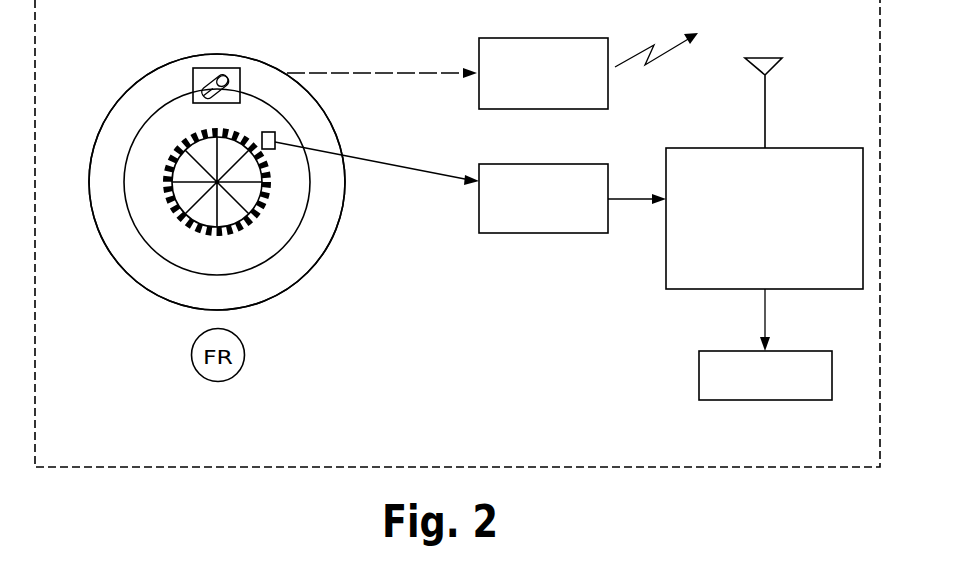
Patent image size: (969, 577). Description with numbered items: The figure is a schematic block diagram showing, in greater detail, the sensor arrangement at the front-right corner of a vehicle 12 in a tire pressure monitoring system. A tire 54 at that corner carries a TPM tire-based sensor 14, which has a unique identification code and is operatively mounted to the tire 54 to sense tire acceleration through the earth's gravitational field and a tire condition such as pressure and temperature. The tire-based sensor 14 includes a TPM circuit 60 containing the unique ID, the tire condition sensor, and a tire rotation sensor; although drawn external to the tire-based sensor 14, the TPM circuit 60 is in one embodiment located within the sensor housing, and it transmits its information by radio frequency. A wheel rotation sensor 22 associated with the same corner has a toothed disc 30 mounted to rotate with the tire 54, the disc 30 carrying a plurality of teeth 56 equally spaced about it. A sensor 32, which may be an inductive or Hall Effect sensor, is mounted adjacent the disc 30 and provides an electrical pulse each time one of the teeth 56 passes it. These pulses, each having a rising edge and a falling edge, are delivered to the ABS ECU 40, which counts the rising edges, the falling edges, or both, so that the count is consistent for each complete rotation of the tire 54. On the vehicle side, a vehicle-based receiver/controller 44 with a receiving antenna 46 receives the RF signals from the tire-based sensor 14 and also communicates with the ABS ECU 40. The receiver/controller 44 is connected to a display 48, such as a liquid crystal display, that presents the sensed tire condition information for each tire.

The vehicle 12 is at (170, 468).
The tire-based sensor 14 is at (226, 68).
The wheel rotation sensor 22 is at (147, 219).
The toothed disc 30 is at (243, 233).
The sensor 32 is at (275, 138).
The ABS ECU 40 is at (515, 164).
The vehicle-based receiver/controller 44 is at (800, 148).
The receiving antenna 46 is at (772, 70).
The display 48 is at (800, 400).
The tire 54 is at (150, 88).
The teeth 56 is at (280, 196).
The TPM circuit 60 is at (608, 92).